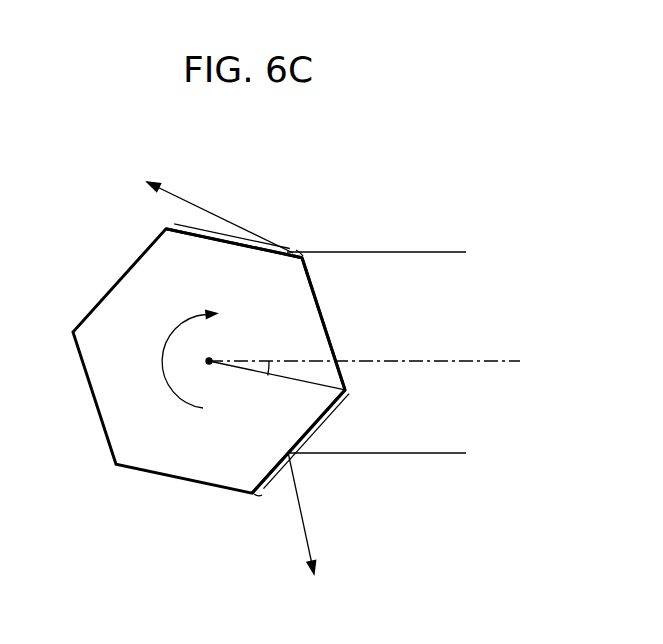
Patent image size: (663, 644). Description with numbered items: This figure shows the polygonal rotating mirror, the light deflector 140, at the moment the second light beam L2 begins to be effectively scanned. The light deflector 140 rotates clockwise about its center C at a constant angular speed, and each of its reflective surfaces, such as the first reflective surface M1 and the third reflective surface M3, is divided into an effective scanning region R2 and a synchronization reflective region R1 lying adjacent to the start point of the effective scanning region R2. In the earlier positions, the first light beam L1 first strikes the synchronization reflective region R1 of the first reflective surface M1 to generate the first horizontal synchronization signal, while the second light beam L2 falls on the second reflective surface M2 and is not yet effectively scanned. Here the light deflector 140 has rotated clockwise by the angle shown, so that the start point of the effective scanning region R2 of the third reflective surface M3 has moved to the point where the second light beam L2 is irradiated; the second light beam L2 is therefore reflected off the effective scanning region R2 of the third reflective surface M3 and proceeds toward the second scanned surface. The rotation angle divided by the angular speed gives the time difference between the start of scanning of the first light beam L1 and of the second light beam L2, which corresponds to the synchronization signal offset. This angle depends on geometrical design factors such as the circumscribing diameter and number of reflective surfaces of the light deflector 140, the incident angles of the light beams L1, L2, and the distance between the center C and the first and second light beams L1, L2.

The light deflector 140 is at (103, 434).
The first reflective surface M1 is at (349, 401).
The second reflective surface M2 is at (321, 316).
The third reflective surface M3 is at (193, 229).
The synchronization reflective region R1 is at (296, 250).
The effective scanning region R2 is at (230, 236).
The first light beam L1 is at (437, 454).
The second light beam L2 is at (432, 252).
The center C is at (492, 360).